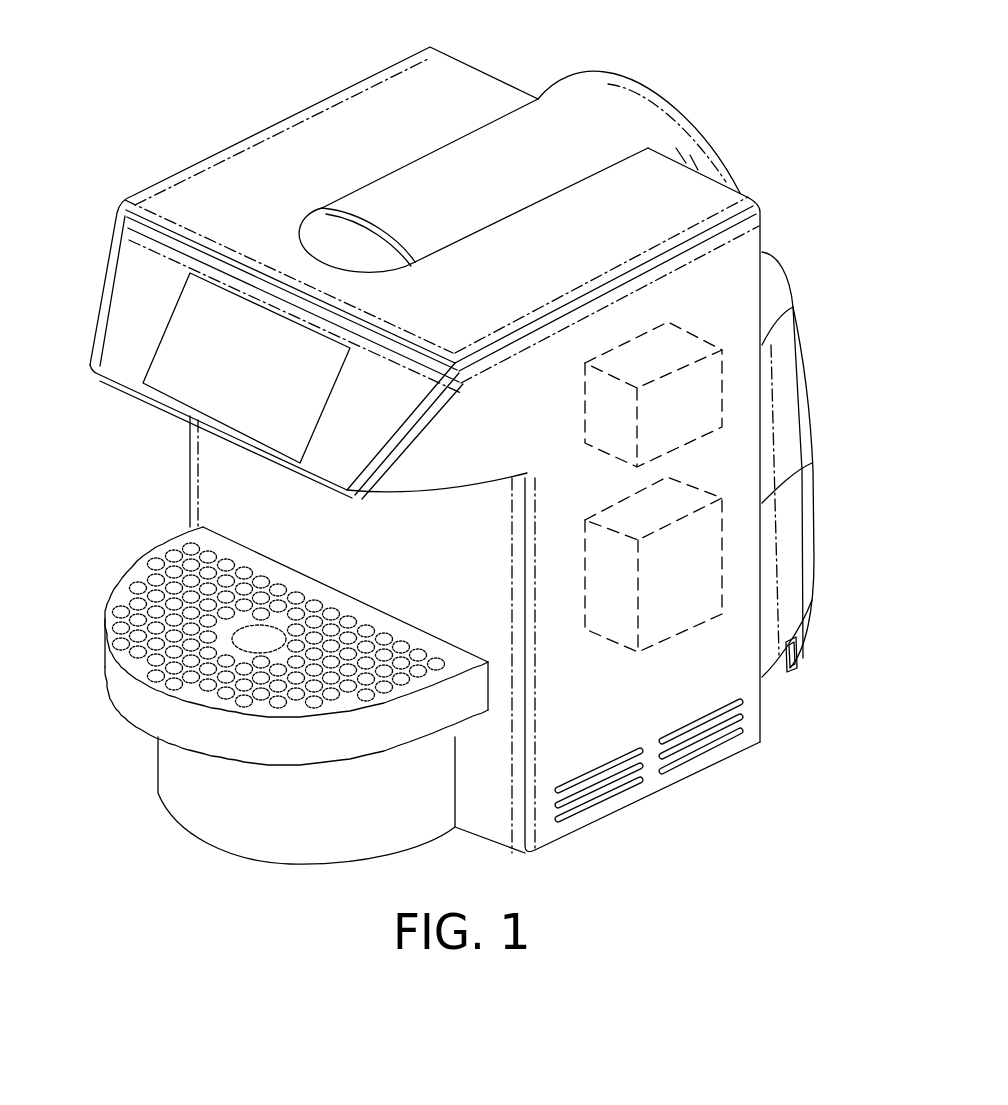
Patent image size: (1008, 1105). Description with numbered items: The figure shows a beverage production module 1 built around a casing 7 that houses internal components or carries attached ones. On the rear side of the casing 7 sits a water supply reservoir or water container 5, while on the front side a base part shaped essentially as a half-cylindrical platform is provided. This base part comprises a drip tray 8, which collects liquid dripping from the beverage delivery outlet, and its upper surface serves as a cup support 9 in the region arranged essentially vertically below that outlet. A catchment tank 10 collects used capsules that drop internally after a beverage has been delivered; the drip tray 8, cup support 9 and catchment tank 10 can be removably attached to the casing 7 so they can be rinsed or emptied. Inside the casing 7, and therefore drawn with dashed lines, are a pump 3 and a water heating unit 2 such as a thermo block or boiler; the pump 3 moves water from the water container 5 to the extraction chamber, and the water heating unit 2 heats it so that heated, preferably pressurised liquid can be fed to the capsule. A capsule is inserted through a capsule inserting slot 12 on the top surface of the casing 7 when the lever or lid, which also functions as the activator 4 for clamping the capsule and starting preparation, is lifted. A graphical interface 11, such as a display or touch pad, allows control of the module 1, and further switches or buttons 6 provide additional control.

The beverage production module 1 is at (693, 46).
The water heating unit 2 is at (730, 358).
The pump 3 is at (728, 528).
The activator 4 is at (450, 150).
The water container 5 is at (810, 413).
The switches or buttons 6 is at (798, 655).
The casing 7 is at (728, 685).
The drip tray 8 is at (395, 840).
The cup support 9 is at (108, 600).
The catchment tank 10 is at (200, 487).
The graphical interface 11 is at (178, 388).
The capsule inserting slot 12 is at (328, 231).